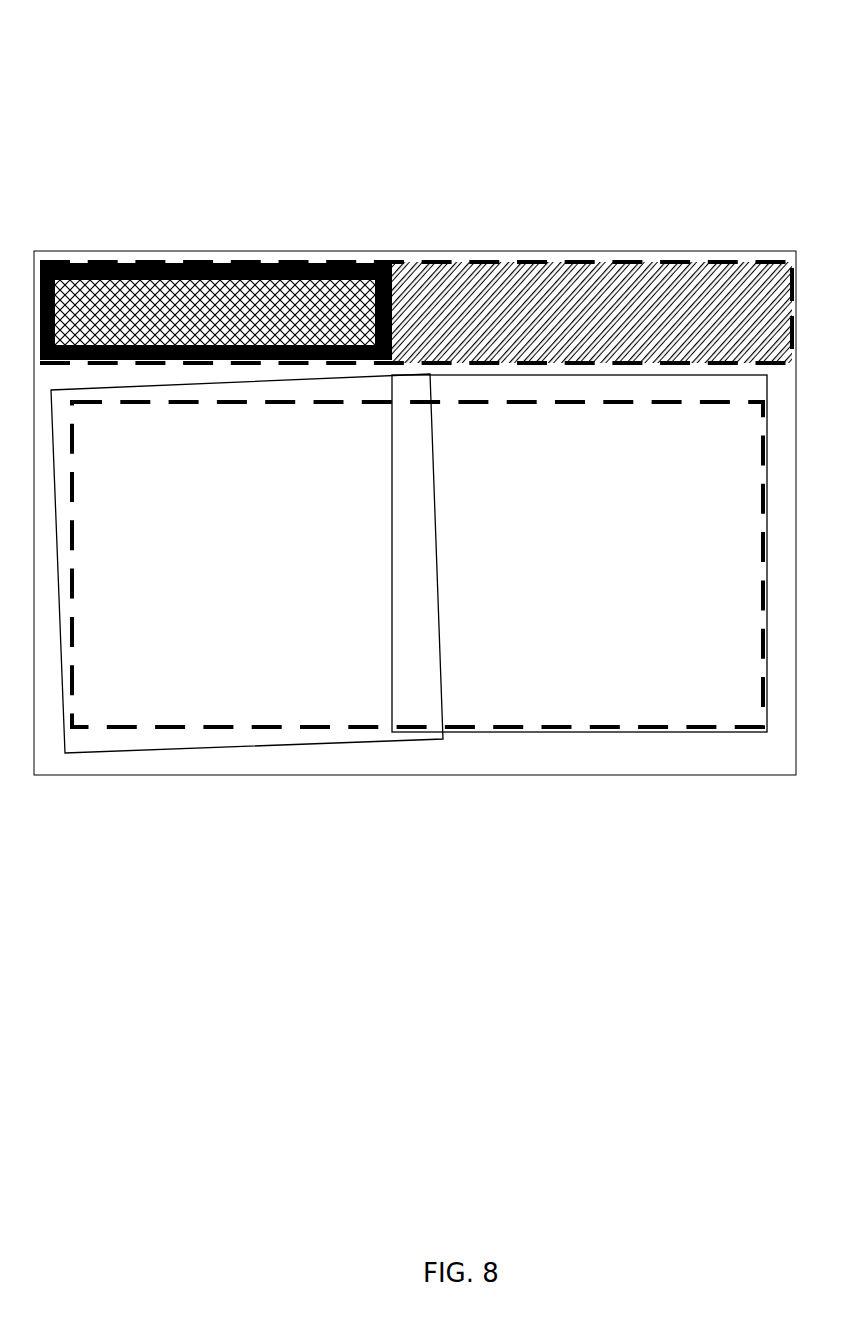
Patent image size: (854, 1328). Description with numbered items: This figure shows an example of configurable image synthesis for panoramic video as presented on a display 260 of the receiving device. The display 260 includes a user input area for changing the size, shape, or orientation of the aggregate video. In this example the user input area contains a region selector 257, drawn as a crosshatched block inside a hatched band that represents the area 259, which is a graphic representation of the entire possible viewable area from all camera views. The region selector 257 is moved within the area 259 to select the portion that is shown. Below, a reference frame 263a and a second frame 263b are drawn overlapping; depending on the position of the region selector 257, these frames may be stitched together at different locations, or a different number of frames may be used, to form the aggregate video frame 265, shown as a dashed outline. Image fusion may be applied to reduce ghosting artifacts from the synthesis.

The display 260 is at (155, 68).
The region selector 257 is at (243, 262).
The area 259 is at (392, 262).
The reference frame 263a is at (118, 388).
The second frame 263b is at (468, 377).
The aggregate video frame 265 is at (607, 403).